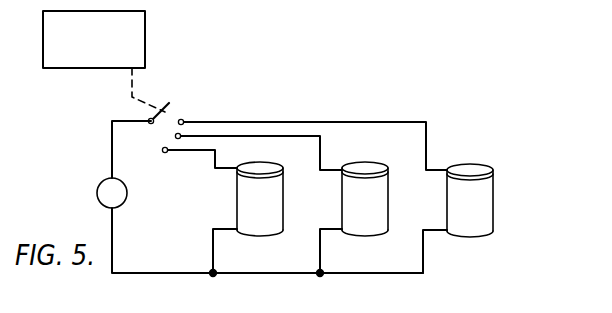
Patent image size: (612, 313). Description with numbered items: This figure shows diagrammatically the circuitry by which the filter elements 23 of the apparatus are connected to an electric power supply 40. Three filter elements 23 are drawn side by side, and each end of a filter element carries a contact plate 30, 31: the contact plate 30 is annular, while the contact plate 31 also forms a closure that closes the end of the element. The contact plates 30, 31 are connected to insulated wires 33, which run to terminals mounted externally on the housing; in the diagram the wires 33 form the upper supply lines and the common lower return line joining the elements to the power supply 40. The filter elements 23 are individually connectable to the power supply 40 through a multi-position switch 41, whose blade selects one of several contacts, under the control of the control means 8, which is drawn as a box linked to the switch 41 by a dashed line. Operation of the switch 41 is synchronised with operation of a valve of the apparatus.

The control means 8 is at (87, 51).
The multi-position switch 41 is at (184, 101).
The insulated wires 33 is at (358, 122).
The power supply 40 is at (97, 193).
The filter elements 23 is at (389, 199).
The contact plate 31 is at (492, 171).
The contact plate 30 is at (499, 237).